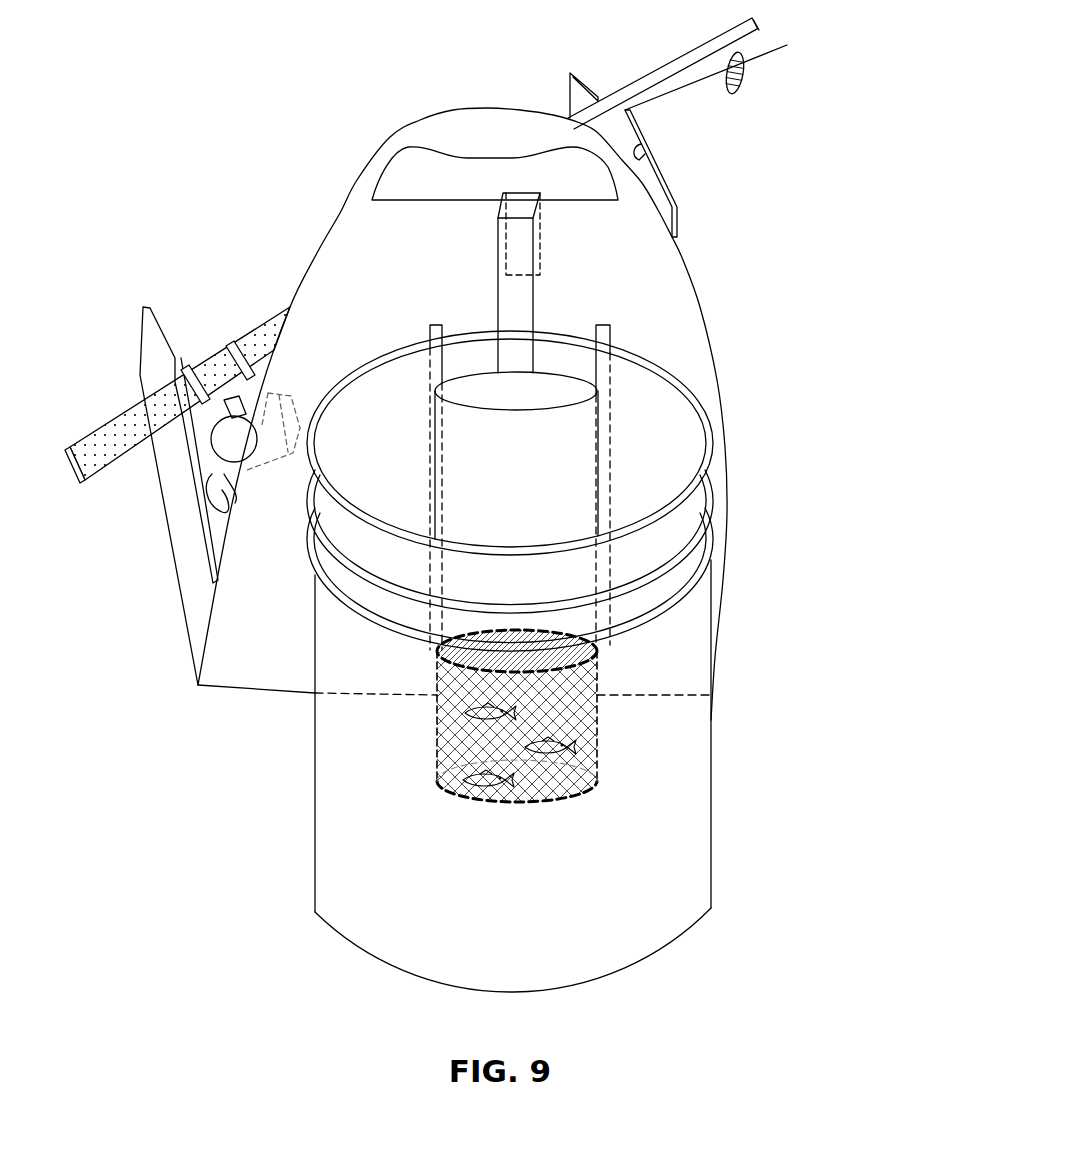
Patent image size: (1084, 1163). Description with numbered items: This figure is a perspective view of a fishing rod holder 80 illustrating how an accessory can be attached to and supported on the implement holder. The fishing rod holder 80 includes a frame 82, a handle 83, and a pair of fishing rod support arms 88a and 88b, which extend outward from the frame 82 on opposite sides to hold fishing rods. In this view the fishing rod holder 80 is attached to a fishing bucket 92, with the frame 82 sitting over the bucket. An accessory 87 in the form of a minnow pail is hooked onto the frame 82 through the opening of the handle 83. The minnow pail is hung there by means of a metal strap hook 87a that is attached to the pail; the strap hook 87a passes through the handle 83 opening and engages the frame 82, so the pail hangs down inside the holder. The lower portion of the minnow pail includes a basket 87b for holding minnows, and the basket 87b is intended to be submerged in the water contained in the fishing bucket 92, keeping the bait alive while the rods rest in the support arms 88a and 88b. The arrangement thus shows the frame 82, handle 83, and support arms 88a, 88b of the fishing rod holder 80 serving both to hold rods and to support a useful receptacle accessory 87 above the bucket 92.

The fishing rod holder 80 is at (511, 535).
The frame 82 is at (700, 307).
The handle 83 is at (485, 132).
The accessory 87 is at (612, 480).
The metal strap hook 87a is at (518, 292).
The basket 87b is at (587, 744).
The fishing rod support arm 88a is at (643, 142).
The fishing rod support arm 88b is at (197, 544).
The fishing bucket 92 is at (698, 790).